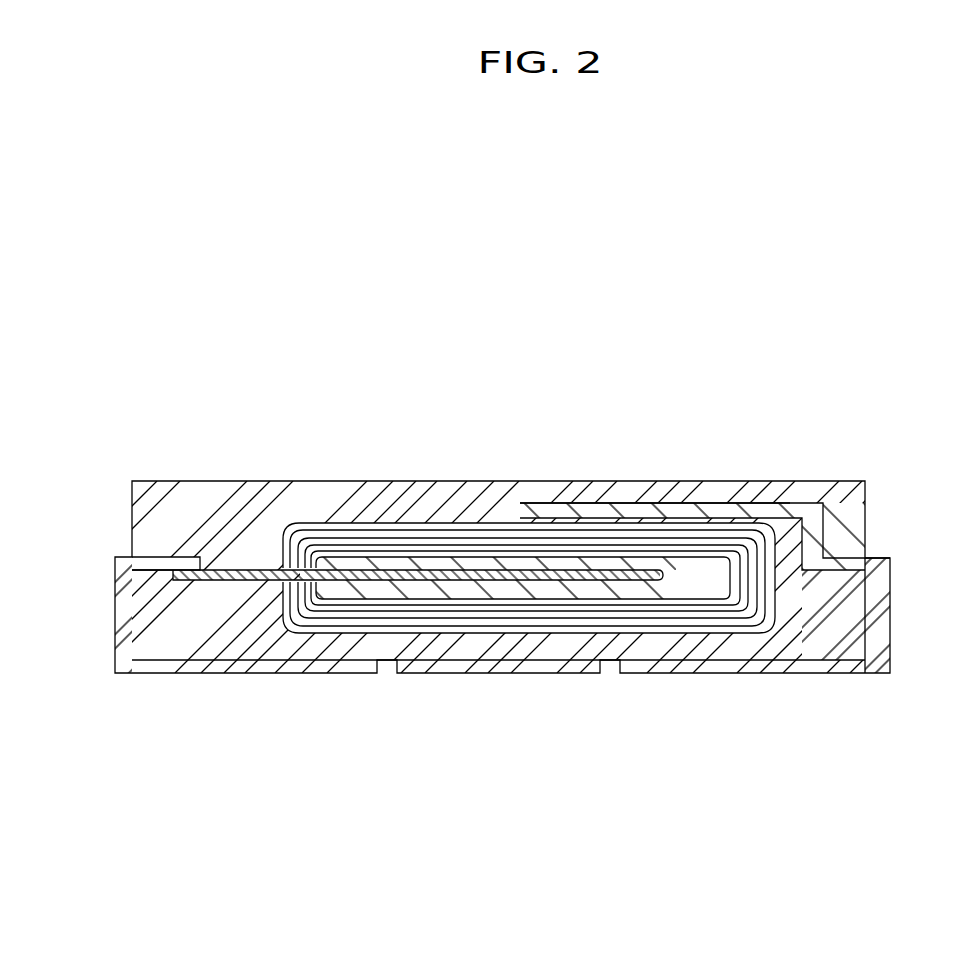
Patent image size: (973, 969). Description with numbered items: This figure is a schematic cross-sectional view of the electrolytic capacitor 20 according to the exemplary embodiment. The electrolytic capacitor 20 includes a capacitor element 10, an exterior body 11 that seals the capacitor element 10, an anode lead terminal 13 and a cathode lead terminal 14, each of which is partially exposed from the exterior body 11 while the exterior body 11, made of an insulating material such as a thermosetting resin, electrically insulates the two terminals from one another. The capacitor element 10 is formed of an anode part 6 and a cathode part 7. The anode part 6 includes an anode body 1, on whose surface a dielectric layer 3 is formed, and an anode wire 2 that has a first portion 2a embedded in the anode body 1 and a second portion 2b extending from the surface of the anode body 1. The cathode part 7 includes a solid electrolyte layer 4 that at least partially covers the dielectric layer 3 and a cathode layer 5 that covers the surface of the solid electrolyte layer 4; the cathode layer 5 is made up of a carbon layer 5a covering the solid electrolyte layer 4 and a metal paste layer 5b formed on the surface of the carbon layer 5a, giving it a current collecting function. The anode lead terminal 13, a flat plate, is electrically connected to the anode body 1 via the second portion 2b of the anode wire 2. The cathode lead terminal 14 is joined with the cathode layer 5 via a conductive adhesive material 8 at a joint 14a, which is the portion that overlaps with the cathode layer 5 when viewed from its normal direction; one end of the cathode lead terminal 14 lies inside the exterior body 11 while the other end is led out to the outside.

The anode body 1 is at (521, 559).
The anode wire 2 is at (404, 580).
The first portion 2a is at (564, 592).
The second portion 2b is at (228, 582).
The dielectric layer 3 is at (446, 548).
The solid electrolyte layer 4 is at (400, 540).
The cathode layer 5 is at (526, 559).
The carbon layer 5a is at (352, 533).
The metal paste layer 5b is at (318, 524).
The anode part 6 is at (440, 559).
The cathode part 7 is at (524, 528).
The conductive adhesive material 8 is at (590, 504).
The capacitor element 10 is at (453, 503).
The exterior body 11 is at (221, 495).
The anode lead terminal 13 is at (120, 631).
The cathode lead terminal 14 is at (739, 553).
The joint 14a is at (680, 510).
The electrolytic capacitor 20 is at (784, 392).